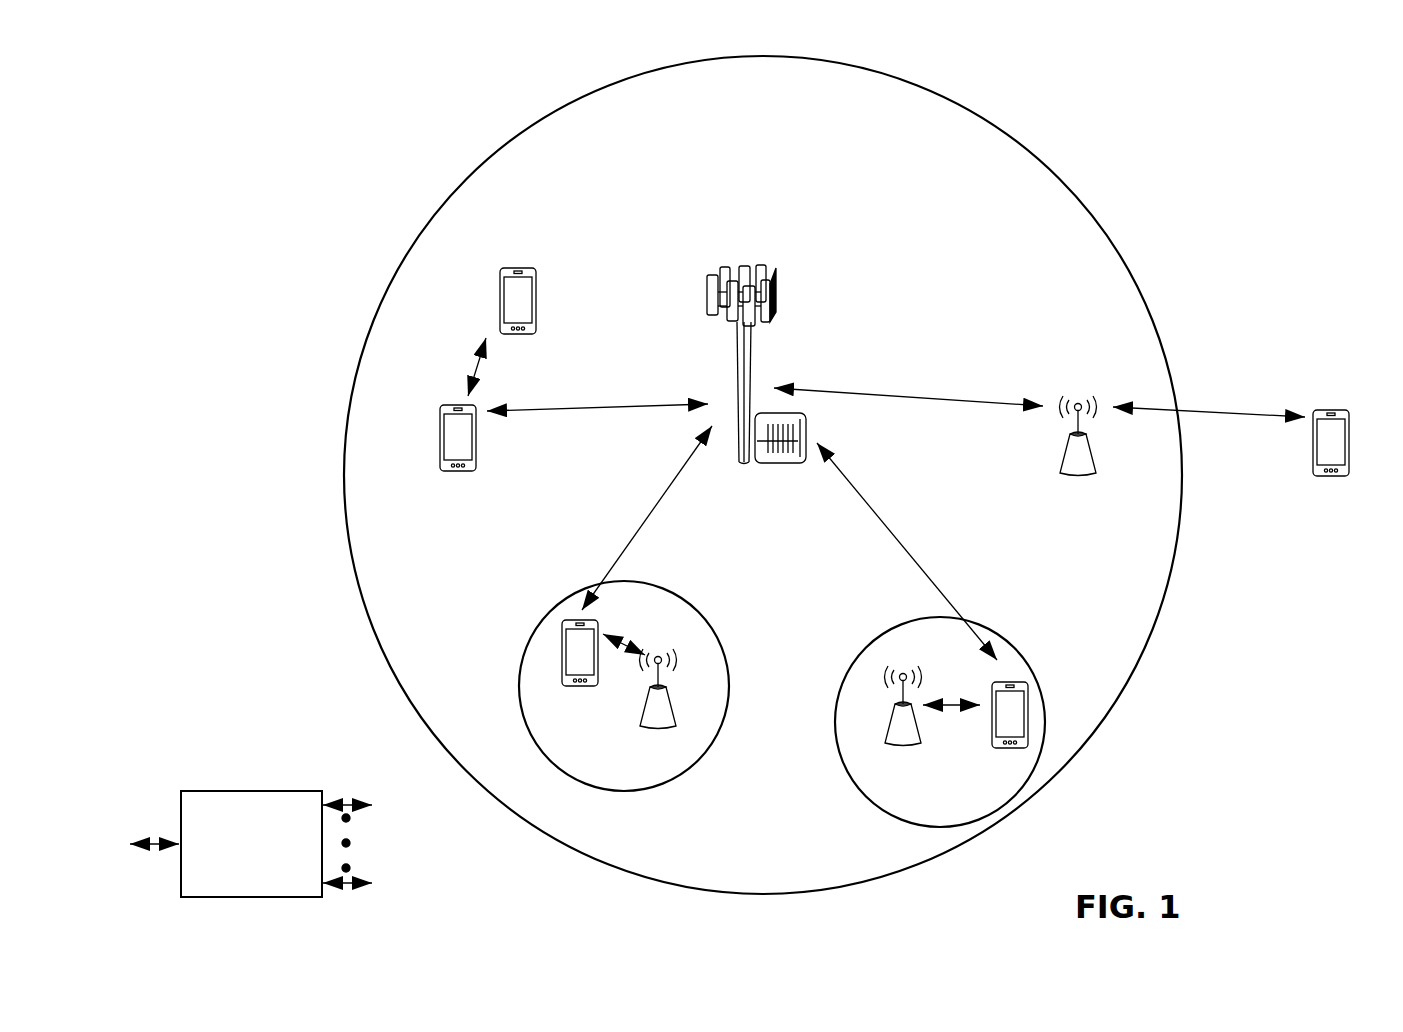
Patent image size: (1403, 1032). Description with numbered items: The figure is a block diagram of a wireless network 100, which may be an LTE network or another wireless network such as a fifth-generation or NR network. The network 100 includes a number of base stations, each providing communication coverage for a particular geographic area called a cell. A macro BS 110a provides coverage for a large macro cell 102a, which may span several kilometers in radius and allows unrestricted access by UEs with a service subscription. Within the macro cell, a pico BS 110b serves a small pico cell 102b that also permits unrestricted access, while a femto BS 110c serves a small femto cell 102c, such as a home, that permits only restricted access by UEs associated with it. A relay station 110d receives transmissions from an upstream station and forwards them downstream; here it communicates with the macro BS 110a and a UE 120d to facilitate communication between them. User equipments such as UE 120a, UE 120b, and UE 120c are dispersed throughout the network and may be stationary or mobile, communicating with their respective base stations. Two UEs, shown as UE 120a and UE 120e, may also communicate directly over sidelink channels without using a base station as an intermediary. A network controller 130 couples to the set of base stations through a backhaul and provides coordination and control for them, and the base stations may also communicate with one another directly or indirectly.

The wireless network 100 is at (228, 52).
The macro cell 102a is at (1043, 163).
The pico cell 102b is at (719, 627).
The femto cell 102c is at (878, 637).
The macro BS 110a is at (748, 258).
The pico BS 110b is at (678, 722).
The femto BS 110c is at (887, 734).
The relay station 110d is at (1079, 399).
The UE 120a is at (440, 440).
The UE 120b is at (568, 688).
The UE 120c is at (994, 748).
The UE 120d is at (1340, 410).
The UE 120e is at (500, 292).
The network controller 130 is at (249, 790).